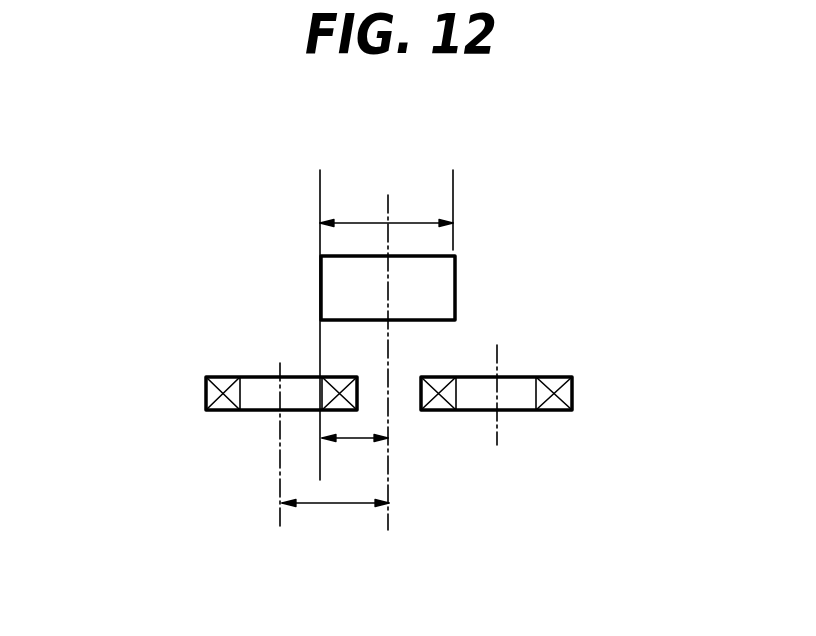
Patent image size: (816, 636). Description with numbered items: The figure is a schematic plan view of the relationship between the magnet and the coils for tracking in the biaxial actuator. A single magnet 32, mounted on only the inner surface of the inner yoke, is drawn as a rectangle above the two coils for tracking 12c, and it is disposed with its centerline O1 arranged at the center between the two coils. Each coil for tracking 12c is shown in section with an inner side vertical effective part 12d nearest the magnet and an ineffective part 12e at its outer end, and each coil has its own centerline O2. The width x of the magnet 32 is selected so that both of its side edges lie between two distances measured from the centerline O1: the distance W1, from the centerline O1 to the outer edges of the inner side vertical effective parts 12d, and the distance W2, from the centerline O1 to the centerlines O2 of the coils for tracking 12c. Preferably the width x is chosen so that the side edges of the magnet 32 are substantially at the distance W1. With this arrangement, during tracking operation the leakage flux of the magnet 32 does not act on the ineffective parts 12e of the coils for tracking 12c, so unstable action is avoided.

The magnet 32 is at (455, 283).
The coils for tracking 12c is at (196, 364).
The inner side vertical effective parts 12d is at (335, 378).
The ineffective parts 12e is at (215, 411).
The centerline of the magnet O1 is at (390, 200).
The centerlines of the coils for tracking O2 is at (282, 458).
The width of the magnet x is at (356, 221).
The distance from the centerline to the outer edges of the inner side vertical effec W1 is at (352, 441).
The distance from the centerline to the centerlines of the coils for tracking W2 is at (343, 505).